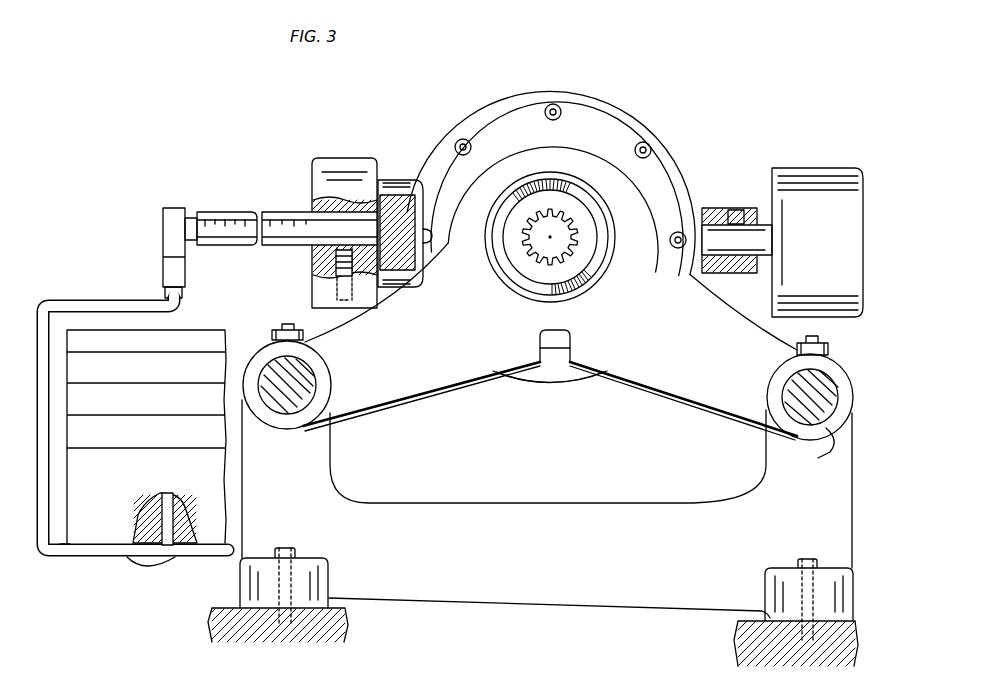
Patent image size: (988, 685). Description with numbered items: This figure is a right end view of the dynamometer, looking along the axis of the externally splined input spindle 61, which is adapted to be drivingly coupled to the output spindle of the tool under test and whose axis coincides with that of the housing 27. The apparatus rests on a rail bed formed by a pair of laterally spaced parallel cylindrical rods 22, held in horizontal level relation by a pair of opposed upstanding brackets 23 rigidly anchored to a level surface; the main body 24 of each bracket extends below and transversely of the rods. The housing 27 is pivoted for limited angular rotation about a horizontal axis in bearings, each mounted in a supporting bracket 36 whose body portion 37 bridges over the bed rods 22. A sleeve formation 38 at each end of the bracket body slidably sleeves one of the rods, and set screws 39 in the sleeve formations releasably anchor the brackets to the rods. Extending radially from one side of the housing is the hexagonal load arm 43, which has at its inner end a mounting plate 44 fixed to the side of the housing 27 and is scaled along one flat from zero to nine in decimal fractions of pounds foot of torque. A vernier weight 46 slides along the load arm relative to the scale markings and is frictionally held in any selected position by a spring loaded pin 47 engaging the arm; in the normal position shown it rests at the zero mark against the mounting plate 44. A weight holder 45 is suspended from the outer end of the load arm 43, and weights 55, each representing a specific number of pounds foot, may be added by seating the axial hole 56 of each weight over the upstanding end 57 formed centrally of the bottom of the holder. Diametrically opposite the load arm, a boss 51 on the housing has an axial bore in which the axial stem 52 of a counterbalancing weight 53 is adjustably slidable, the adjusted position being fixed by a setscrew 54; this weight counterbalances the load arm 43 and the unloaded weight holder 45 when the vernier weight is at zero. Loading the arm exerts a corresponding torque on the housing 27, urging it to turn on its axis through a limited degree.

The rods 22 is at (275, 370).
The brackets 23 is at (484, 598).
The main body 24 is at (558, 597).
The housing 27 is at (547, 92).
The supporting bracket 36 is at (565, 148).
The body portion 37 is at (405, 399).
The sleeve formation 38 is at (270, 428).
The set screws 39 is at (818, 335).
The load arm 43 is at (218, 216).
The mounting plate 44 is at (392, 180).
The weight holder 45 is at (118, 283).
The vernier weight 46 is at (322, 163).
The spring loaded pin 47 is at (336, 256).
The boss 51 is at (710, 207).
The axial stem 52 is at (735, 273).
The counterbalancing weight 53 is at (815, 168).
The setscrew 54 is at (738, 208).
The weights 55 is at (84, 548).
The axial hole 56 is at (172, 496).
The upstanding end 57 is at (176, 552).
The input spindle 61 is at (527, 262).